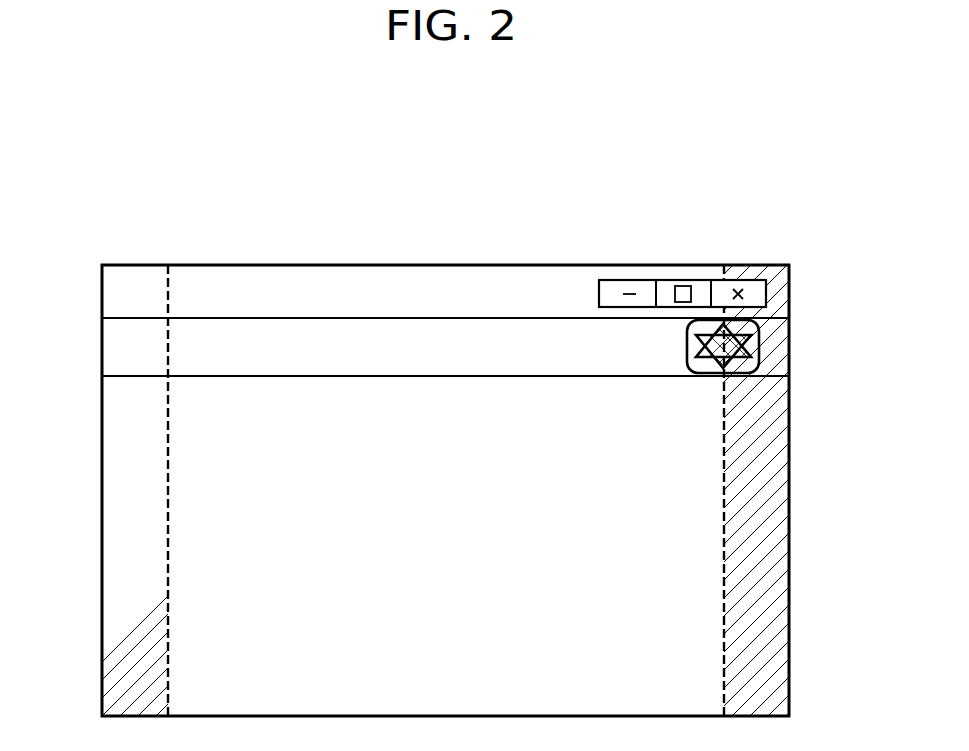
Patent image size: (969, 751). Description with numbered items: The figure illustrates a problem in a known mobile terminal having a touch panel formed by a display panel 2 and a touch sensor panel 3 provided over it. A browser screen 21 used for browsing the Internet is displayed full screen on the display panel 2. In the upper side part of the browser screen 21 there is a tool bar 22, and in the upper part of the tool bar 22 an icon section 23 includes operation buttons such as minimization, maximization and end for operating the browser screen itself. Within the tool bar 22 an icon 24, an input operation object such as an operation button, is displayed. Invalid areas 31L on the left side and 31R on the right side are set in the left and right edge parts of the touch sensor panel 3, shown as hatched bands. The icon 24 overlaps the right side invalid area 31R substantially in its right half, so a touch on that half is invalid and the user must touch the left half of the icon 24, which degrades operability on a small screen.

The display panel 2 is at (205, 265).
The touch sensor panel 3 is at (445, 490).
The browser screen 21 is at (188, 605).
The tool bar 22 is at (420, 362).
The icon section 23 is at (599, 292).
The icon 24 is at (761, 345).
The left side invalid area 31L is at (131, 402).
The right side invalid area 31R is at (760, 493).